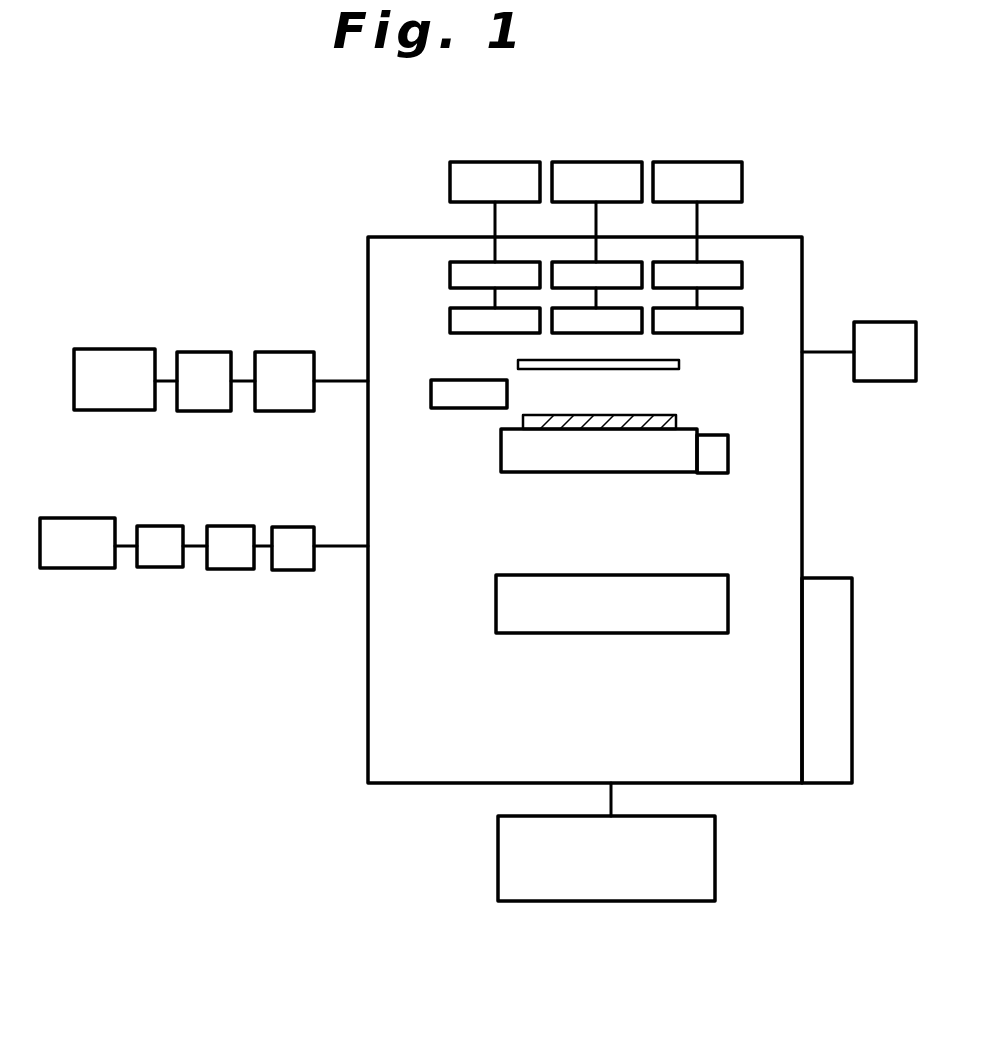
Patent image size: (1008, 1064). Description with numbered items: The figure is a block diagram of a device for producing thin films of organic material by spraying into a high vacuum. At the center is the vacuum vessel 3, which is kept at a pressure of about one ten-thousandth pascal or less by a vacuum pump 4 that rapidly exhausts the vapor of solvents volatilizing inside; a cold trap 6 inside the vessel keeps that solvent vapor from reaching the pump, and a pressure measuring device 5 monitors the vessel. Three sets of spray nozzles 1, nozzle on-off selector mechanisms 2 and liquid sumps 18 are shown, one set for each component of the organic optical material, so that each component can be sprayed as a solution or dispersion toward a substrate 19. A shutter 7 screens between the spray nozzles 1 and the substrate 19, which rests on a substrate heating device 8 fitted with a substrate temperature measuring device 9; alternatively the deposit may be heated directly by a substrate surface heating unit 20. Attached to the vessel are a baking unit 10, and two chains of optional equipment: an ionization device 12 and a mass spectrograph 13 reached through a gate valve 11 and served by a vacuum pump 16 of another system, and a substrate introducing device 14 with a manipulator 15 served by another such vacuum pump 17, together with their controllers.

The spray nozzle 1 is at (596, 319).
The selector mechanism 2 is at (596, 281).
The vacuum vessel 3 is at (368, 706).
The vacuum pump 4 is at (715, 855).
The pressure measuring device 5 is at (896, 322).
The cold trap 6 is at (663, 633).
The shutter 7 is at (679, 364).
The substrate heating device 8 is at (598, 472).
The substrate temperature measuring device 9 is at (713, 473).
The baking unit 10 is at (838, 578).
The gate valve 11 is at (307, 527).
The ionization device 12 is at (242, 526).
The mass spectrograph 13 is at (178, 526).
The substrate introducing device 14 is at (302, 352).
The manipulator 15 is at (217, 352).
The gas source 16 is at (102, 518).
The vacuum pump of another system 17 is at (122, 349).
The liquid sump 18 is at (521, 162).
The substrate 19 is at (672, 416).
The substrate surface heating unit 20 is at (460, 380).